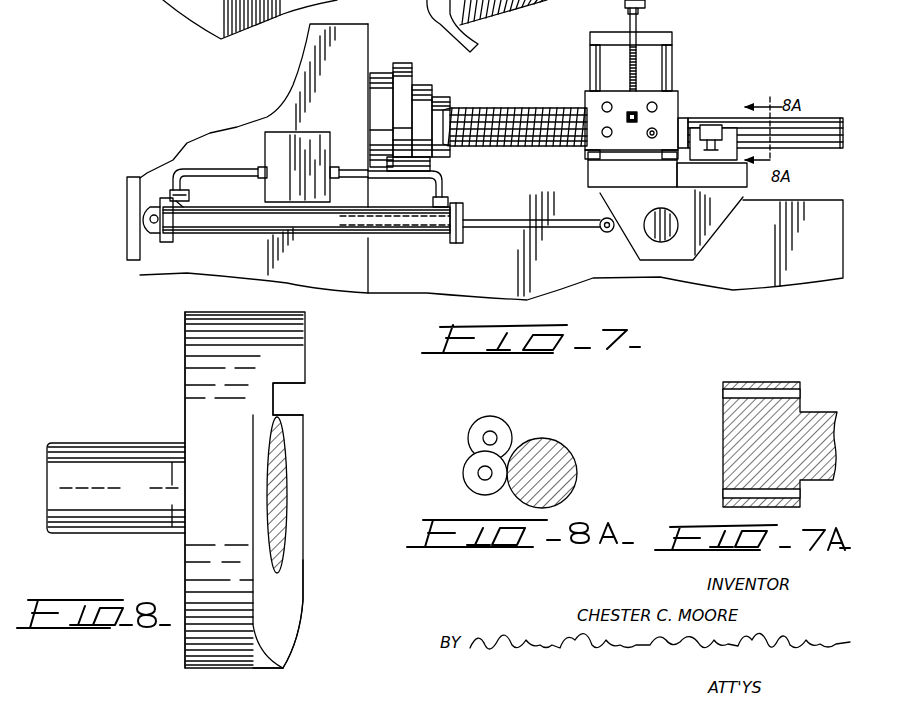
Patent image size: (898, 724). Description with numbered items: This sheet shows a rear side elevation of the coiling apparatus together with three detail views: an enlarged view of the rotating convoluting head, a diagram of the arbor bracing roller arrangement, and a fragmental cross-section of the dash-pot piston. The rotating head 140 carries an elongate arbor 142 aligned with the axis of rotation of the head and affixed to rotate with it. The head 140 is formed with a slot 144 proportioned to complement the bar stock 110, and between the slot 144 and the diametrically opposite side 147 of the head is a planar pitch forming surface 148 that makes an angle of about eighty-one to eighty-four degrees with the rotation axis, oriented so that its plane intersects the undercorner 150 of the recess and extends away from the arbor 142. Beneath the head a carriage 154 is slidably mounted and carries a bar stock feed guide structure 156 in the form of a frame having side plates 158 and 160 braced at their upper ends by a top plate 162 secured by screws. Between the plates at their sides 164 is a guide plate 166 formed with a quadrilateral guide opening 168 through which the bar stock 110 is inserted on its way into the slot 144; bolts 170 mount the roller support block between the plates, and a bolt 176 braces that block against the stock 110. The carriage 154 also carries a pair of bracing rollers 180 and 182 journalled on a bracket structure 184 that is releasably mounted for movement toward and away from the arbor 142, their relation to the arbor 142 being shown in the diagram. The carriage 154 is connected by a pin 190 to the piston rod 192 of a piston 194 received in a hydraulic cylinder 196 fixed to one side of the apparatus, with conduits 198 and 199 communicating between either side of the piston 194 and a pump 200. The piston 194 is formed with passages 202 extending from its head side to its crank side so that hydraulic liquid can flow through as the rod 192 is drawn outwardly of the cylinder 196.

In FIG. 7, the bar stock 110 is at (632, 113).
In FIG. 8, the rotating head 140 is at (183, 352).
In FIG. 7, the arbor 142 is at (818, 128).
In FIG. 8A, the arbor 142 is at (567, 455).
In FIG. 8, the slot 144 is at (303, 397).
In FIG. 8, the diametrically opposite side 147 is at (283, 670).
In FIG. 8, the pitch forming surface 148 is at (287, 613).
In FIG. 8, the undercorner 150 is at (293, 417).
In FIG. 7, the carriage 154 is at (733, 181).
In FIG. 7, the bar stock feed guide structure 156 is at (653, 45).
In FIG. 7, the side plate 158 is at (675, 53).
In FIG. 7, the side plate 160 is at (590, 63).
In FIG. 7, the top plate 162 is at (660, 37).
In FIG. 7, the sides 164 is at (590, 78).
In FIG. 7, the guide plate 166 is at (678, 107).
In FIG. 7, the guide opening 168 is at (633, 108).
In FIG. 7, the bolts 170 is at (654, 132).
In FIG. 7, the bolt 176 is at (633, 67).
In FIG. 8A, the bracing roller 180 is at (506, 438).
In FIG. 8A, the bracing roller 182 is at (467, 478).
In FIG. 7, the bracket structure 184 is at (715, 158).
In FIG. 7, the pin 190 is at (605, 232).
In FIG. 7, the piston rod 192 is at (507, 224).
In FIG. 7, the piston 194 is at (352, 234).
In FIG. 7A, the piston 194 is at (730, 440).
In FIG. 7, the hydraulic cylinder 196 is at (407, 234).
In FIG. 7, the conduit 198 is at (212, 168).
In FIG. 7, the conduit 199 is at (353, 167).
In FIG. 7, the pump 200 is at (280, 132).
In FIG. 7A, the passages 202 is at (767, 396).